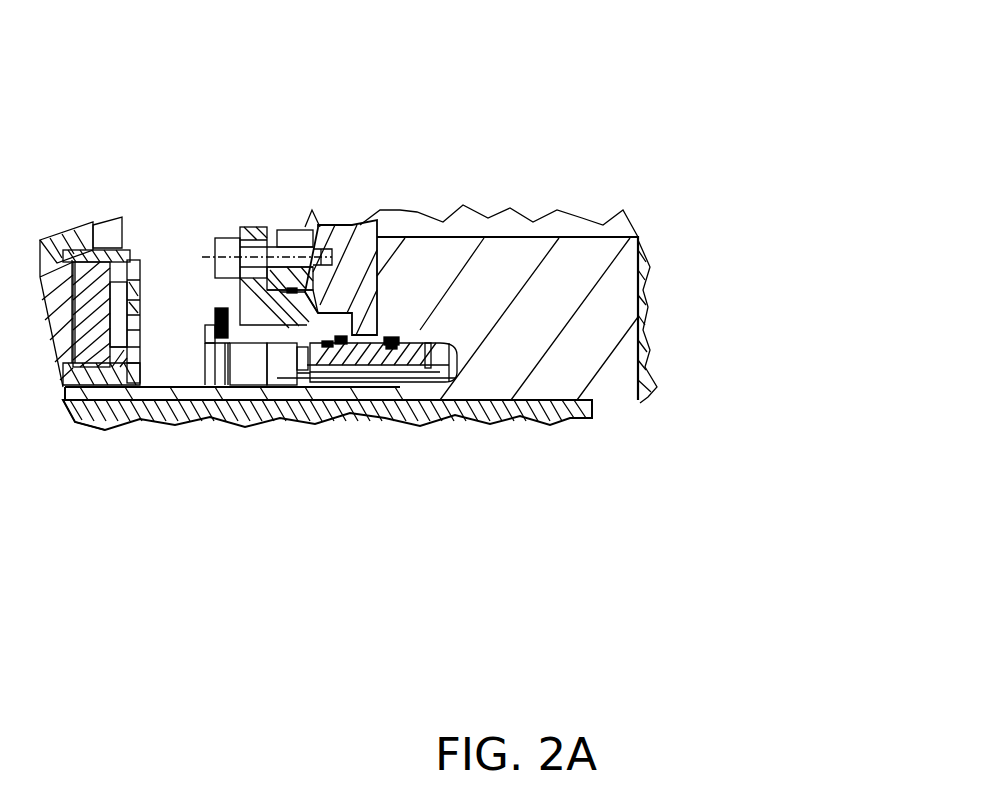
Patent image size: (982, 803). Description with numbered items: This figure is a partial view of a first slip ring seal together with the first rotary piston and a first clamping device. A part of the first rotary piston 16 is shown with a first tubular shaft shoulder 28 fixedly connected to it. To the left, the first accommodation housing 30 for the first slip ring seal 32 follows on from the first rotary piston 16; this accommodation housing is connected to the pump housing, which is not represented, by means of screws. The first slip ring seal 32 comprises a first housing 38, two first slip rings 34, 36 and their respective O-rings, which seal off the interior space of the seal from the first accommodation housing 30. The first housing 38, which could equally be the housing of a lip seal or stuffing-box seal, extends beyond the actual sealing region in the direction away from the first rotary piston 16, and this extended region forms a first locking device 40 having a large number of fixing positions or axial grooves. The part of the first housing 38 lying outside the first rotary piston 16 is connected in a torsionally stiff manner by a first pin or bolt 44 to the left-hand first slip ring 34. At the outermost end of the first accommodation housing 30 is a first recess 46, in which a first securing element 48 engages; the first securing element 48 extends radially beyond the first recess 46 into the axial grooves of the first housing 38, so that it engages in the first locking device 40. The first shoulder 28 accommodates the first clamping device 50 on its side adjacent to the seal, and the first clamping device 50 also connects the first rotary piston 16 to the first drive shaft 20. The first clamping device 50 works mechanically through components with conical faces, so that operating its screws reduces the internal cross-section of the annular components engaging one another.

The first rotary piston 16 is at (552, 305).
The first drive shaft 20 is at (298, 422).
The first tubular shaft shoulder 28 is at (344, 393).
The first accommodation housing 30 is at (352, 196).
The first slip ring seal 32 is at (407, 296).
The first slip ring 34 is at (355, 345).
The first slip ring 36 is at (406, 368).
The first housing 38 is at (300, 338).
The first locking device 40 is at (249, 359).
The first pin or bolt 44 is at (292, 292).
The first recess 46 is at (201, 318).
The first securing element 48 is at (221, 308).
The first clamping device 50 is at (98, 430).